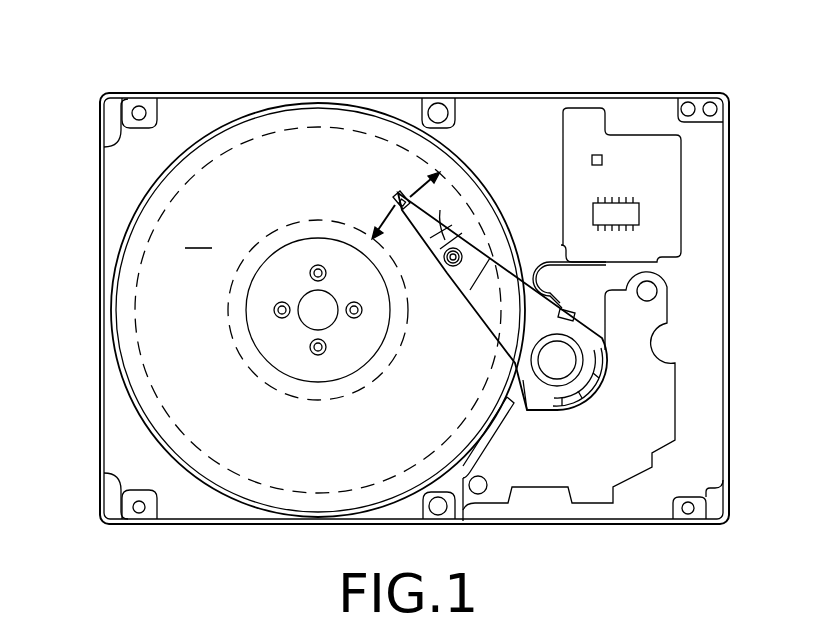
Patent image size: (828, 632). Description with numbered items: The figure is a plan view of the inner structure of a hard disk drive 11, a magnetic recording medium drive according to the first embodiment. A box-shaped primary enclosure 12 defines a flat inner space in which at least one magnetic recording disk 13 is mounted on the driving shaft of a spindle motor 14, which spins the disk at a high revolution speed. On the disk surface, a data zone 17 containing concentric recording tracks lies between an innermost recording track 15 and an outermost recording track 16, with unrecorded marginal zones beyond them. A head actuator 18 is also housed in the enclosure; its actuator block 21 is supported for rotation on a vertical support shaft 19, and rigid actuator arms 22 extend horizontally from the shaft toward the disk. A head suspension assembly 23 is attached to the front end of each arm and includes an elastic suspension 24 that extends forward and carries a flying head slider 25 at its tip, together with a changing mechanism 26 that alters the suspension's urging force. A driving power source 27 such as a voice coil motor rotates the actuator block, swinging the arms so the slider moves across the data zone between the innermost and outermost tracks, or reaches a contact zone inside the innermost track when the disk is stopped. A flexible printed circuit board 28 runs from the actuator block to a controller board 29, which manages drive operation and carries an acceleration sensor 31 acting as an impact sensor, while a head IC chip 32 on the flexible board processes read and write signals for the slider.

The hard disk drive 11 is at (320, 93).
The primary enclosure 12 is at (100, 168).
The magnetic recording disk 13 is at (112, 237).
The spindle motor 14 is at (308, 322).
The innermost recording track 15 is at (258, 378).
The outermost recording track 16 is at (137, 312).
The data zone 17 is at (198, 230).
The head actuator 18 is at (515, 373).
The vertical support shaft 19 is at (588, 367).
The actuator block 21 is at (578, 394).
The actuator arm 22 is at (490, 313).
The head suspension assembly 23 is at (455, 240).
The elastic suspension 24 is at (417, 225).
The flying head slider 25 is at (397, 205).
The changing mechanism 26 is at (453, 237).
The driving power source 27 is at (485, 441).
The flexible printed circuit board 28 is at (543, 254).
The controller board 29 is at (668, 260).
The acceleration sensor 31 is at (616, 160).
The head IC chip 32 is at (563, 296).